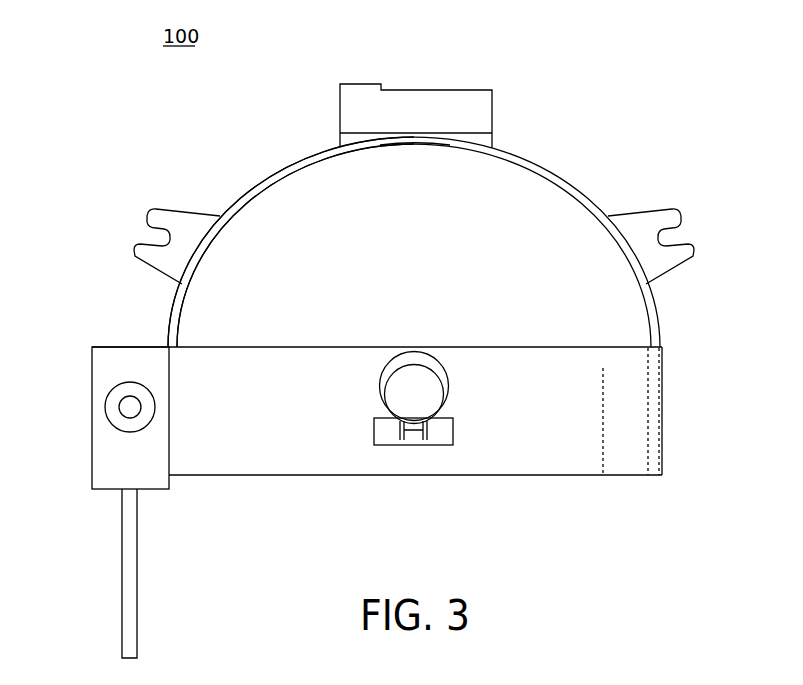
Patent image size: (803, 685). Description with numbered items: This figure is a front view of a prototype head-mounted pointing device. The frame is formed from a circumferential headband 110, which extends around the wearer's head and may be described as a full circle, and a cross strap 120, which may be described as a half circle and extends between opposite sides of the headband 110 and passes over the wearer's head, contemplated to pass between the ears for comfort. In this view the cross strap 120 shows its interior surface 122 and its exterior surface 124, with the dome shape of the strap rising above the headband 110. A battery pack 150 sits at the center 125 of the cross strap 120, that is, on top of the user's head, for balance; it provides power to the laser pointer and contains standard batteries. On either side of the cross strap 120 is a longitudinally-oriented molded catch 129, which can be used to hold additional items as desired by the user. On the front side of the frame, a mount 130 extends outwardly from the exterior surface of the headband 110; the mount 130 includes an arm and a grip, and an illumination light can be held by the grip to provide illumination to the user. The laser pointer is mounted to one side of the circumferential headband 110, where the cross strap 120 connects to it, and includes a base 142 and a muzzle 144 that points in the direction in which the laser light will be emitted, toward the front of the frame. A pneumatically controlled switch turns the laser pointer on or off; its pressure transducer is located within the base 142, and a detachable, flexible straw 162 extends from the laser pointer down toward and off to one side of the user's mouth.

The circumferential headband 110 is at (653, 413).
The cross strap 120 is at (550, 170).
The interior surface 122 is at (263, 188).
The exterior surface 124 is at (270, 175).
The center 125 is at (417, 145).
The longitudinally-oriented molded catch 129 is at (142, 254).
The mount 130 is at (442, 433).
The base 142 is at (106, 374).
The muzzle 144 is at (117, 423).
The battery pack 150 is at (472, 97).
The straw 162 is at (125, 577).